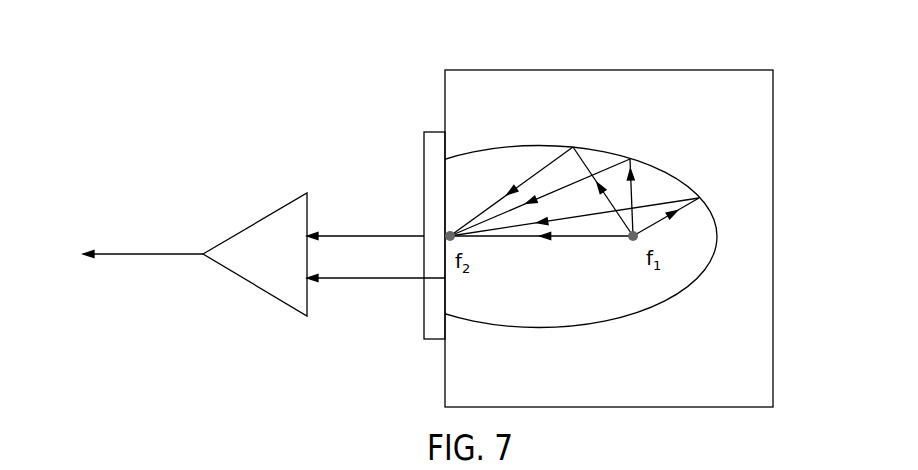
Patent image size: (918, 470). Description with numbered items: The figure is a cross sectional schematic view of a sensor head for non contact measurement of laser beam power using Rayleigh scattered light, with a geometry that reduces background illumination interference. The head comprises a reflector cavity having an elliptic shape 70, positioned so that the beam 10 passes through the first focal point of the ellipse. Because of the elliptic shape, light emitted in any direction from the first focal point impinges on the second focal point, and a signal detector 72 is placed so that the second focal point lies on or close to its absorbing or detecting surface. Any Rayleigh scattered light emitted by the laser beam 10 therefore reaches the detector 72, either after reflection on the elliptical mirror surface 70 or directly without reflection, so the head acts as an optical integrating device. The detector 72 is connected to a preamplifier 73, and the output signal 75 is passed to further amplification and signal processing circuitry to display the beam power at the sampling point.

The beam 10 is at (633, 242).
The reflector cavity having an elliptic shape 70 is at (702, 275).
The signal detector 72 is at (424, 143).
The preamplifier 73 is at (278, 208).
The output signal 75 is at (130, 255).